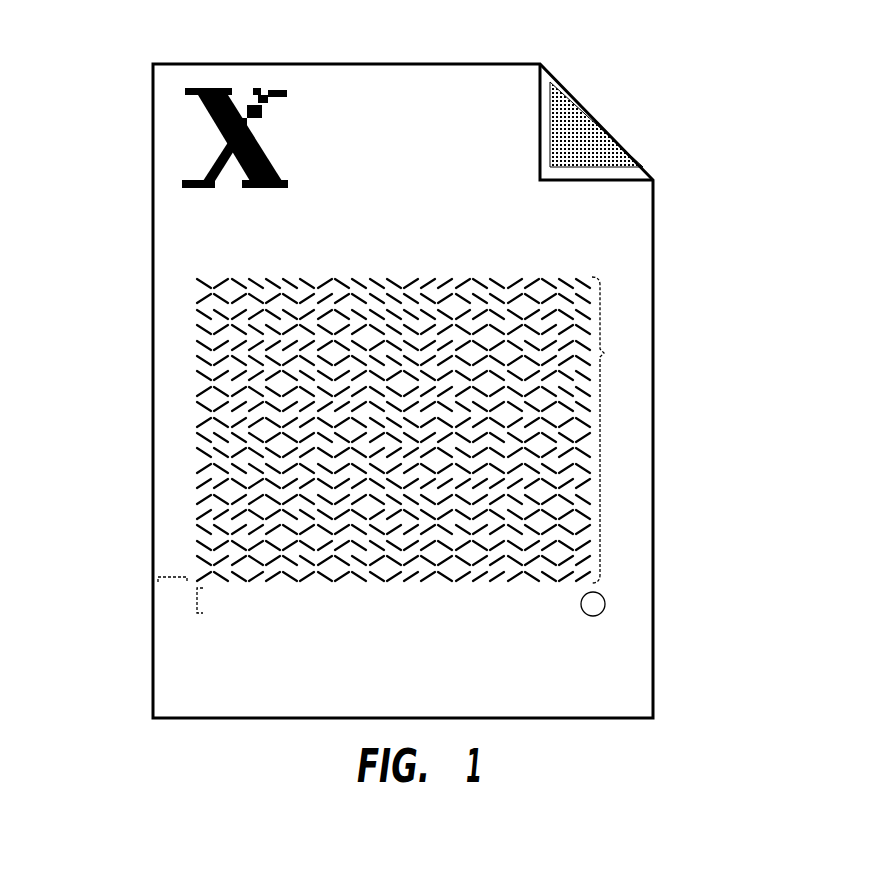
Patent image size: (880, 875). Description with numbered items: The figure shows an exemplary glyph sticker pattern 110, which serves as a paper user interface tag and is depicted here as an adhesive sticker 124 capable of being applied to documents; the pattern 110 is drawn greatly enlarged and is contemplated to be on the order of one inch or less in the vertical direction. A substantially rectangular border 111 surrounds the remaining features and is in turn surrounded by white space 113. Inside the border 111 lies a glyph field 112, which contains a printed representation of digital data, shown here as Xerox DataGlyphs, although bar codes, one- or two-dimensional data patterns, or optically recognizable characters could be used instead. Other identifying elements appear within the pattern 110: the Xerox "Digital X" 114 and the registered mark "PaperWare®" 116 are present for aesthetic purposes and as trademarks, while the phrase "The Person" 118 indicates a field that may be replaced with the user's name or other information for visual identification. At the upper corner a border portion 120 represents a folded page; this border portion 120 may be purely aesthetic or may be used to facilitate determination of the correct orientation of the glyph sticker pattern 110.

The glyph sticker pattern 110 is at (604, 353).
The border 111 is at (653, 518).
The glyph field 112 is at (583, 427).
The white space 113 is at (197, 601).
The Digital X 114 is at (290, 96).
The registered mark "PaperWare" 116 is at (529, 643).
The phrase "The Person" 118 is at (524, 240).
The border portion 120 is at (538, 107).
The adhesive sticker 124 is at (584, 120).